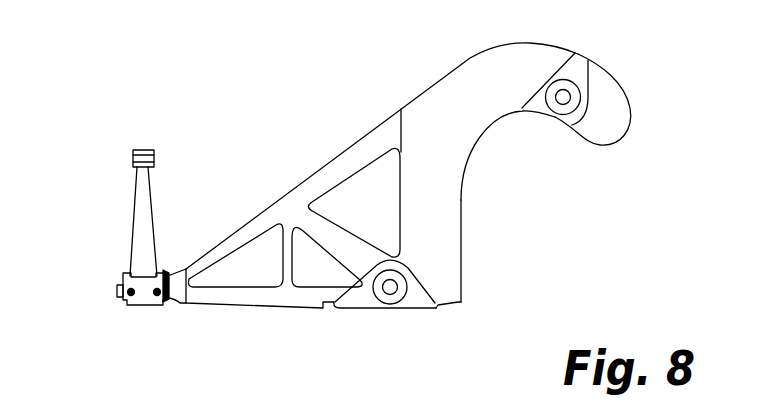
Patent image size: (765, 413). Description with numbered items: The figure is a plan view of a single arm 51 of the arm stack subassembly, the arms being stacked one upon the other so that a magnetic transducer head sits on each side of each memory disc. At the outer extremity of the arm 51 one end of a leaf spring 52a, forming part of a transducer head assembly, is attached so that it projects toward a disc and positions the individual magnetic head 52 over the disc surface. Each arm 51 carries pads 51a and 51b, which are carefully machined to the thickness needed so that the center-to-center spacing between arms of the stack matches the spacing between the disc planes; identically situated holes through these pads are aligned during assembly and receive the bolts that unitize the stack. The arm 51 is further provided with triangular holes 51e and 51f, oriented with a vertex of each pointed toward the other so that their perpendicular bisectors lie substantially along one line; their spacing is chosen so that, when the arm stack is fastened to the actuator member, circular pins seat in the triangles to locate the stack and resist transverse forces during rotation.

The arm 51 is at (310, 178).
The pad 51a is at (535, 110).
The pad 51b is at (360, 309).
The triangular hole 51e is at (602, 108).
The triangular hole 51f is at (429, 272).
The magnetic head 52 is at (145, 149).
The leaf spring 52a is at (136, 212).